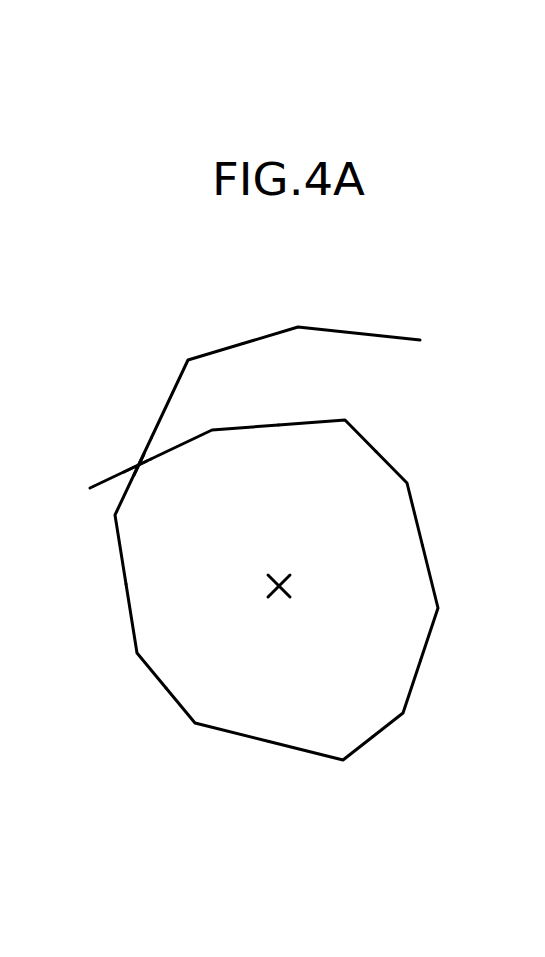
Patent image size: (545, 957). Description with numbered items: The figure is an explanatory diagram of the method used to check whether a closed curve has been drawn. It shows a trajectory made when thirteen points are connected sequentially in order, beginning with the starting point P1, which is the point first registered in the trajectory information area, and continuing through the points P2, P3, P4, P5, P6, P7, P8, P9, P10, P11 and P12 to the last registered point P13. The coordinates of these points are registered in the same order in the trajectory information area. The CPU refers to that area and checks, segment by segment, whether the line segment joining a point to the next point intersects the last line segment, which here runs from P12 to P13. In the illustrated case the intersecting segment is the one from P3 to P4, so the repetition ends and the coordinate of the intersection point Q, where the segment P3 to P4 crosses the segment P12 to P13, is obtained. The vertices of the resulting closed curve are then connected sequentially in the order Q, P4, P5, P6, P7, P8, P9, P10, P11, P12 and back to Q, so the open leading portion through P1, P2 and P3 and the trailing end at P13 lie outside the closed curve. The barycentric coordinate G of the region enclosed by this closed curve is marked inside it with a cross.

The starting point P1 is at (394, 327).
The trajectory point P2 is at (301, 323).
The trajectory point P3 is at (198, 388).
The trajectory point P4 is at (133, 511).
The trajectory point P5 is at (133, 636).
The trajectory point P6 is at (215, 721).
The trajectory point P7 is at (321, 765).
The trajectory point P8 is at (388, 699).
The trajectory point P9 is at (447, 603).
The trajectory point P10 is at (413, 499).
The trajectory point P11 is at (328, 423).
The trajectory point P12 is at (215, 431).
The last registered point P13 is at (96, 482).
The intersection point Q is at (129, 459).
The barycentric coordinate G is at (279, 570).